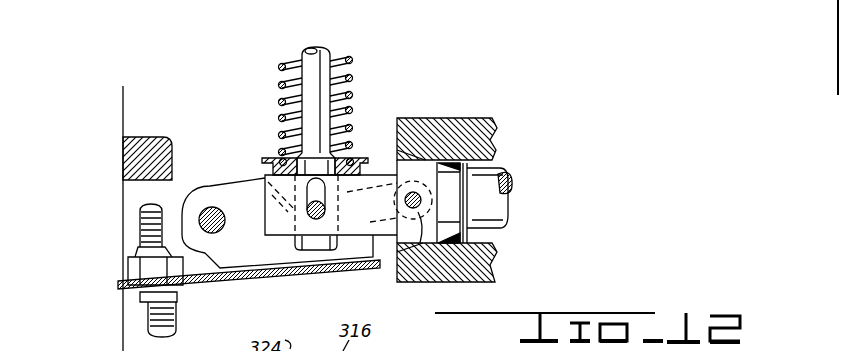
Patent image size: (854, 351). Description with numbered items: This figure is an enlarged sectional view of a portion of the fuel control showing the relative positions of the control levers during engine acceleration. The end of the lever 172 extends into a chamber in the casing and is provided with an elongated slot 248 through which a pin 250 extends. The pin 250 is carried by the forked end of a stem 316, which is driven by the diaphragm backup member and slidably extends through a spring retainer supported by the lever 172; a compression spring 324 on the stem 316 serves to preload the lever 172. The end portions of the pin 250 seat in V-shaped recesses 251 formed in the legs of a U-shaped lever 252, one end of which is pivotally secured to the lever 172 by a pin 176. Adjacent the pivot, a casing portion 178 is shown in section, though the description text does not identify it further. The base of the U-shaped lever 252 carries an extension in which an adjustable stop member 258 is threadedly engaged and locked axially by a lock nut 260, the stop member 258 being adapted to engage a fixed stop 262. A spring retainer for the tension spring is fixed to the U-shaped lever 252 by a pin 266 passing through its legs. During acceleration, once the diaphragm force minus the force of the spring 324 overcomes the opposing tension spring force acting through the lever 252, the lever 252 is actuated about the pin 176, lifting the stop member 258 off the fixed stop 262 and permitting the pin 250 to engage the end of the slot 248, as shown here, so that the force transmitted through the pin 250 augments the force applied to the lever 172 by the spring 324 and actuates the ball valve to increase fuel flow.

The lever 172 is at (490, 198).
The pin 176 is at (423, 279).
The upper housing wall 178 is at (440, 128).
The elongated slot 248 is at (326, 194).
The pin 250 is at (314, 216).
The V-shaped recess 251 is at (264, 232).
The U-shaped lever 252 is at (232, 262).
The adjustable stop member 258 is at (140, 222).
The lock nut 260 is at (130, 273).
The fixed stop 262 is at (148, 138).
The pin 266 is at (210, 207).
The stem 316 is at (318, 58).
The compression spring 324 is at (292, 62).